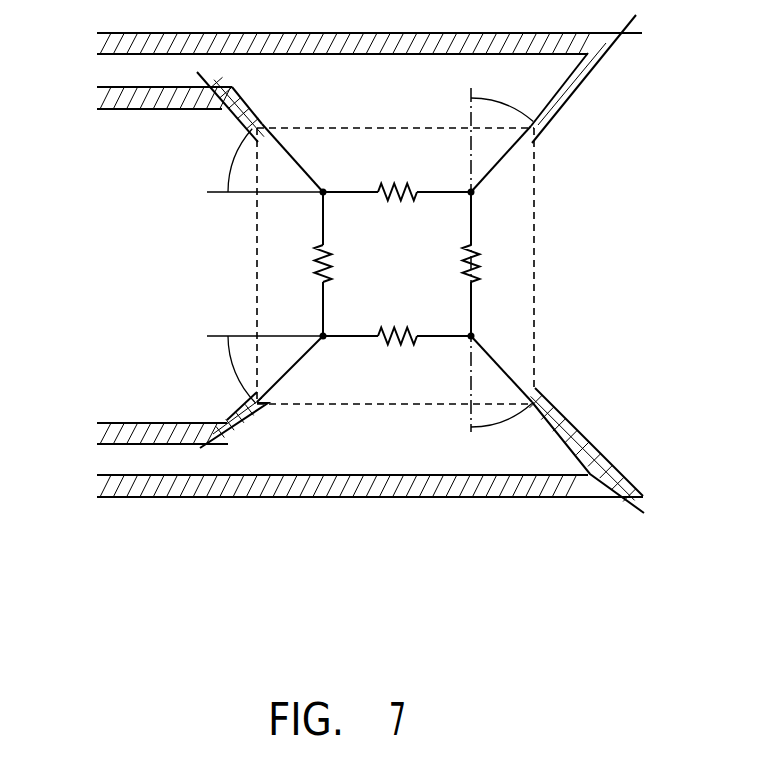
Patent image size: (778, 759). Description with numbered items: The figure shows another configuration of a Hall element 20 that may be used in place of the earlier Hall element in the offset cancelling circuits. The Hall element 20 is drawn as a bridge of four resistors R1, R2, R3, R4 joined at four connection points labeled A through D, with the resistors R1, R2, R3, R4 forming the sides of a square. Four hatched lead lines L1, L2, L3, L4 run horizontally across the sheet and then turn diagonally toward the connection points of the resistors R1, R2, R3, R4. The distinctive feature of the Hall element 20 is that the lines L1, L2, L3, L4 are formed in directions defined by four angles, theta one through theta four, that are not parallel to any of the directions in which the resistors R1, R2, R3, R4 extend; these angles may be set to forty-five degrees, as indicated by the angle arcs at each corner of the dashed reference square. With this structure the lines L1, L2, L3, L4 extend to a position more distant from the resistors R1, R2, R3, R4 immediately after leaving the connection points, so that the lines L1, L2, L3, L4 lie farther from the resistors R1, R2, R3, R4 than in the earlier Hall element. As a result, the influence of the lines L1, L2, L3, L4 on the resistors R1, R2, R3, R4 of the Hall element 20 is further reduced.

The Hall element 20 is at (346, 315).
The line L1 is at (345, 79).
The line L2 is at (346, 450).
The line L3 is at (156, 107).
The line L4 is at (158, 420).
The resistor R1 is at (491, 263).
The resistor R2 is at (397, 178).
The resistor R3 is at (305, 263).
The resistor R4 is at (397, 349).